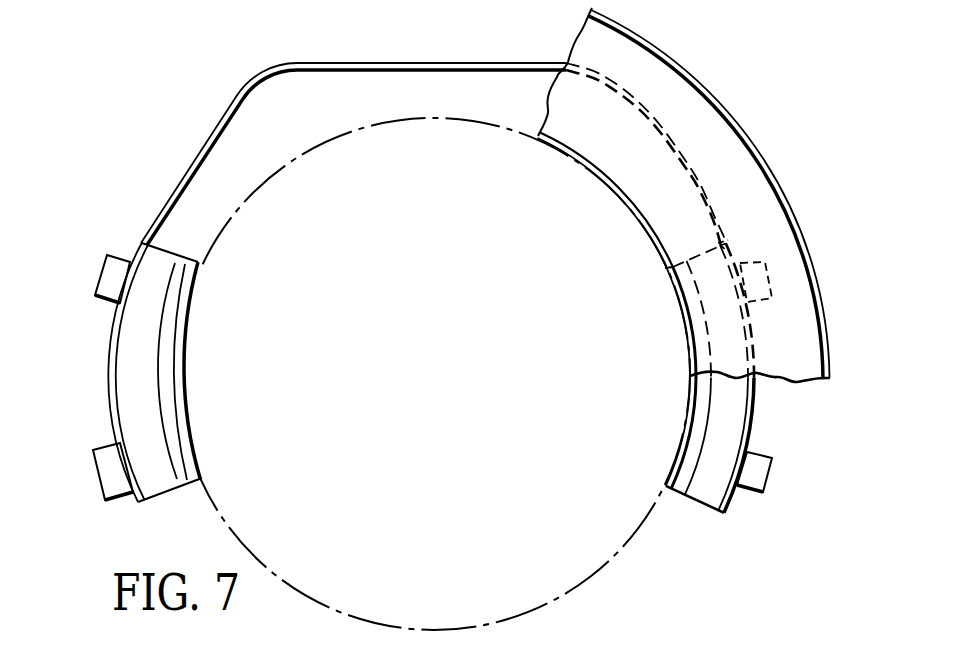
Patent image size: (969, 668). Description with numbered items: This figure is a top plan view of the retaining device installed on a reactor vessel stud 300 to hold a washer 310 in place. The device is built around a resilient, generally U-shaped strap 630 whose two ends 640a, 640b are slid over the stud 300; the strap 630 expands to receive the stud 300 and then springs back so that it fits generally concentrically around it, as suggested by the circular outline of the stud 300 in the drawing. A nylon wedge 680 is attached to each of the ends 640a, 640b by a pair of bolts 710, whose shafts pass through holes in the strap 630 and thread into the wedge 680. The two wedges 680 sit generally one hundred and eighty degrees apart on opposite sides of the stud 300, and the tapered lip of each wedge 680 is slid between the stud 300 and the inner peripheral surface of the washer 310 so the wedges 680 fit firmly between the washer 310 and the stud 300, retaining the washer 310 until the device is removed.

The stud 300 is at (605, 563).
The washer 310 is at (742, 128).
The strap 630 is at (428, 154).
The wedge 680 is at (160, 503).
The bolts 710 is at (108, 301).
The first end of the strap 640a is at (137, 500).
The second end of the strap 640b is at (737, 498).